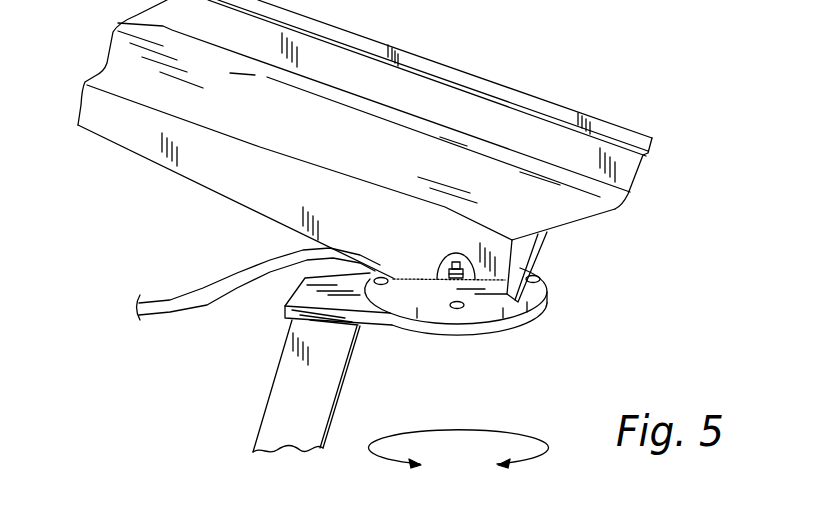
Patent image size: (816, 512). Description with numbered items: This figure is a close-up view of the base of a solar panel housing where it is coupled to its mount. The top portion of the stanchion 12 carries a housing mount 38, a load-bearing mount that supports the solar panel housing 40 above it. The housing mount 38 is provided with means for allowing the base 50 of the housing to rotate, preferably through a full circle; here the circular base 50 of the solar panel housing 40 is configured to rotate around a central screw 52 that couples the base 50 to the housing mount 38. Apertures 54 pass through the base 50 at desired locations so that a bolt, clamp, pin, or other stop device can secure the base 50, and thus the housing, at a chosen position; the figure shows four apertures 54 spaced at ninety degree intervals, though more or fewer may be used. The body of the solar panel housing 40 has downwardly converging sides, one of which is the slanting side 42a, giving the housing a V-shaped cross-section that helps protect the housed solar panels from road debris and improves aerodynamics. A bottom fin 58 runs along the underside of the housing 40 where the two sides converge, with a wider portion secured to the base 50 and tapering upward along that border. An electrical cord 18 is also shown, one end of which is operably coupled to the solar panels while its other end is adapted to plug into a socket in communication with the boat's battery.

The stanchion 12 is at (268, 400).
The electrical cord 18 is at (205, 307).
The housing mount 38 is at (493, 337).
The solar panel housing 40 is at (490, 67).
The downwardly slanting side 42a is at (620, 212).
The base 50 is at (540, 271).
The central screw 52 is at (452, 266).
The apertures 54 is at (543, 284).
The bottom fin 58 is at (210, 189).